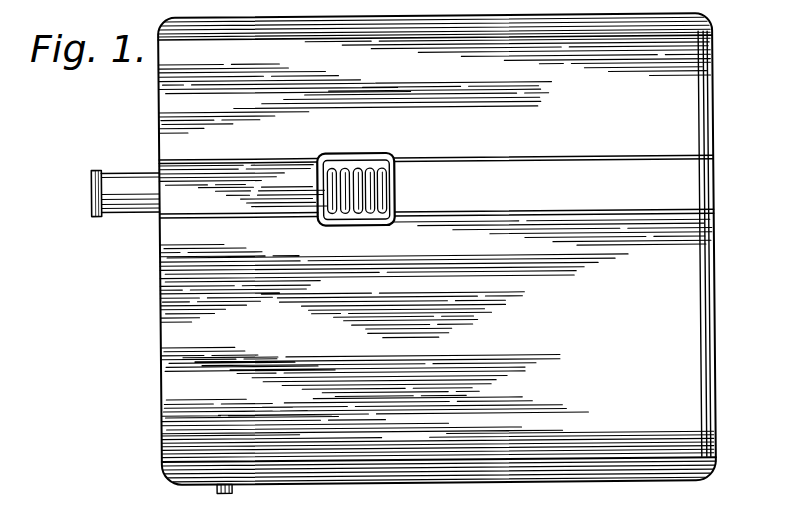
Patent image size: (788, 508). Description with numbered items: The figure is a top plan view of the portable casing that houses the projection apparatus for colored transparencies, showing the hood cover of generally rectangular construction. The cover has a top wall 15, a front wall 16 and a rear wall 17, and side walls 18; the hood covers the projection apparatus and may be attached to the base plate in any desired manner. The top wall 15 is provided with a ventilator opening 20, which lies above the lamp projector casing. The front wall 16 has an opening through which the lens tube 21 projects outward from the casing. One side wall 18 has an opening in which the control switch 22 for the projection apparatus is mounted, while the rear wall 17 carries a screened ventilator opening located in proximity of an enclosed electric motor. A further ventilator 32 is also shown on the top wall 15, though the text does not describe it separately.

The top wall 15 is at (692, 297).
The front wall 16 is at (186, 411).
The rear wall 17 is at (715, 445).
The side walls 18 is at (481, 484).
The ventilator opening 20 is at (323, 228).
The lens tube 21 is at (118, 182).
The control switch 22 is at (231, 488).
The louvered grille 32 is at (310, 164).